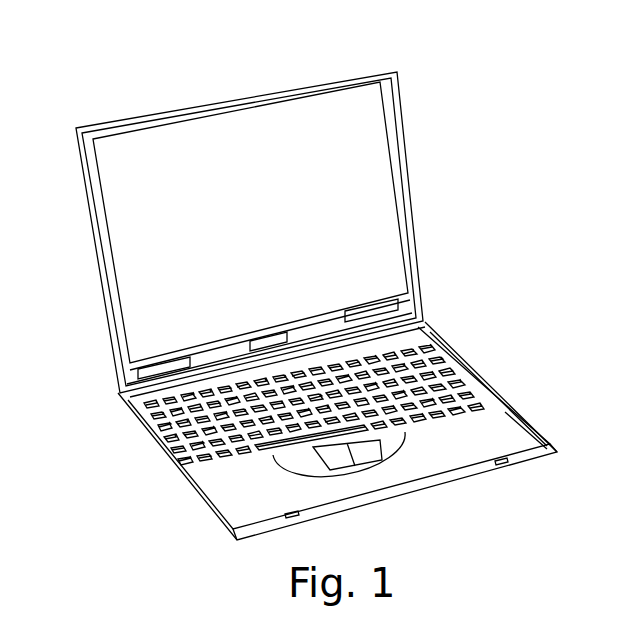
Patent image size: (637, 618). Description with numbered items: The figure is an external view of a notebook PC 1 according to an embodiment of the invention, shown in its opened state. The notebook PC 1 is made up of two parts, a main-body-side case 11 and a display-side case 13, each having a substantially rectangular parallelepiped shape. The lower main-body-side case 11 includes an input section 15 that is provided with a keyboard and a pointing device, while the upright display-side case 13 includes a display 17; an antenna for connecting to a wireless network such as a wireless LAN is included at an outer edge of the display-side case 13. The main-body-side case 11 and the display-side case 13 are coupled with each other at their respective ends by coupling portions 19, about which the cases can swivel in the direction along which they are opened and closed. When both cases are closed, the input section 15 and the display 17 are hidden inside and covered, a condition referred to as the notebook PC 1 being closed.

The notebook PC 1 is at (311, 285).
The main-body-side case 11 is at (326, 431).
The display-side case 13 is at (255, 223).
The input section 15 is at (178, 468).
The display 17 is at (128, 292).
The coupling portions 19 is at (400, 315).